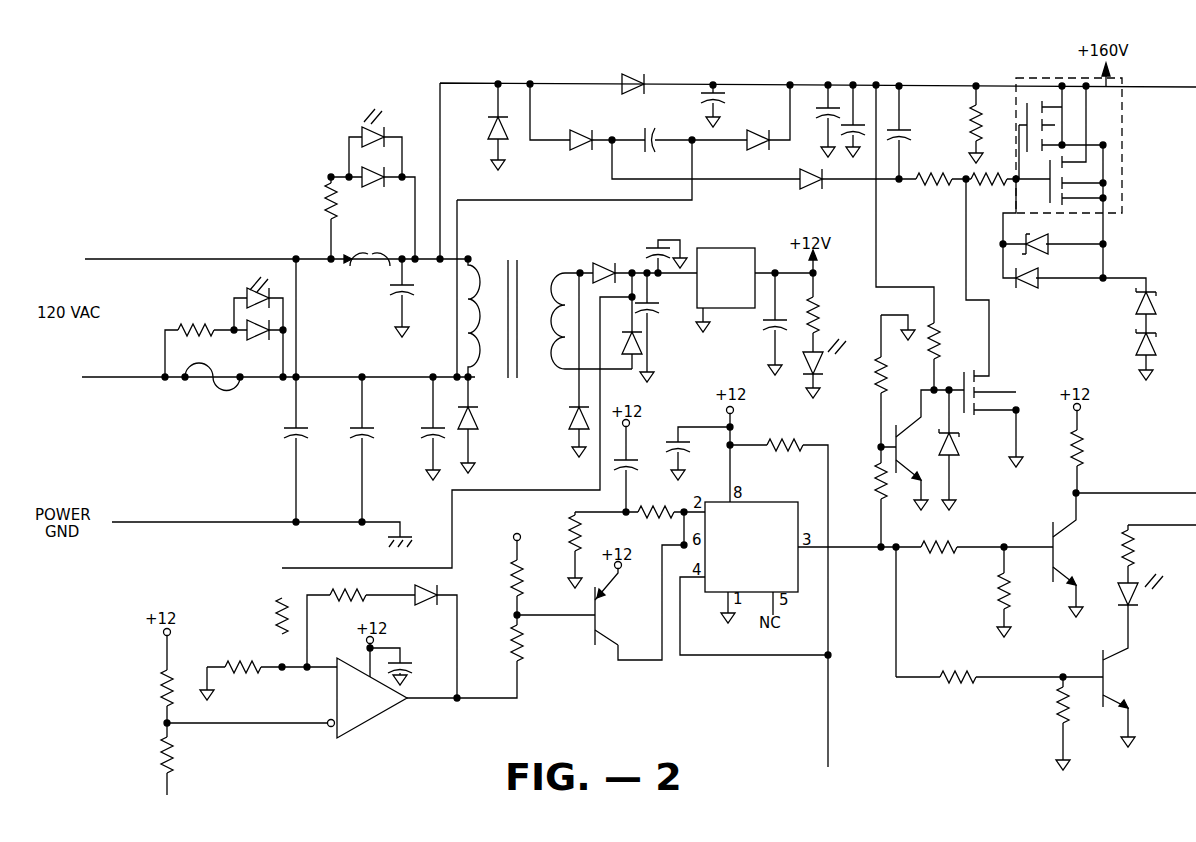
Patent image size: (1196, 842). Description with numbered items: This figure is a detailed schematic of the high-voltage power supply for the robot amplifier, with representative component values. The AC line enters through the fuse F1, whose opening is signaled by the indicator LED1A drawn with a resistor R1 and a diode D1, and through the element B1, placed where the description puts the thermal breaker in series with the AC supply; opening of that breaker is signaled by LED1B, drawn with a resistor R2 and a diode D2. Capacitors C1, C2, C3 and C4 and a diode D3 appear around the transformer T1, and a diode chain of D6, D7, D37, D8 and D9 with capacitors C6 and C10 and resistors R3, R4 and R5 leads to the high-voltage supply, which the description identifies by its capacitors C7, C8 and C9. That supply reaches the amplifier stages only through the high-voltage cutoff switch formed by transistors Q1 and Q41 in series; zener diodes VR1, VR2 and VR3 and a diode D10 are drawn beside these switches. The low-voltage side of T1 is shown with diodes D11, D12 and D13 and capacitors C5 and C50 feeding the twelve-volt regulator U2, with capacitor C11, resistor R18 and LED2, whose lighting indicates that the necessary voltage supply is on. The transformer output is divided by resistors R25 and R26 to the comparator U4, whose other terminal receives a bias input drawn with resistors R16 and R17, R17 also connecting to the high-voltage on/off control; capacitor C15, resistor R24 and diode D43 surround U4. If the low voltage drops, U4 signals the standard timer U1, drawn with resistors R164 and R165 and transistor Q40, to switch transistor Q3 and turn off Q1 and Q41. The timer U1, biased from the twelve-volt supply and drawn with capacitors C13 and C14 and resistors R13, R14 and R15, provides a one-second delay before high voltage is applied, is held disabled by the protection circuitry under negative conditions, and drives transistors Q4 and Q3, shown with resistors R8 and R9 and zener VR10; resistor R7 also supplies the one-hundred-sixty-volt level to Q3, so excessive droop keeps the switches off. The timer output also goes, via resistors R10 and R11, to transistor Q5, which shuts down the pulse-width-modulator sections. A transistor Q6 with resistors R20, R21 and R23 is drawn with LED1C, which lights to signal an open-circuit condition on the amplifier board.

The LED LED1A is at (237, 286).
The resistor R1 10K 2W R1 is at (197, 336).
The diode D1 is at (258, 340).
The fuse F1 is at (211, 393).
The capacitor C1 is at (272, 435).
The capacitor C2 is at (338, 435).
The capacitor C3 is at (380, 316).
The capacitor C4 is at (410, 435).
The diode D3 is at (480, 418).
The resistor R2 10K 2W R2 is at (312, 207).
The diode D2 is at (368, 189).
The LED LED1B is at (351, 118).
The circuit breaker B1 is at (370, 249).
The transformer T1 is at (550, 305).
The diode D6 is at (481, 128).
The diode D7 is at (572, 132).
The capacitor C6 4.7 250V C6 is at (652, 129).
The diode D37 is at (628, 71).
The capacitor C7 is at (719, 104).
The diode D8 is at (755, 152).
The diode D9 is at (808, 188).
The capacitor C8 is at (818, 104).
The capacitor C9 is at (856, 119).
The capacitor C10 4.7 C10 is at (916, 125).
The resistor R3 16K 2W R3 is at (992, 124).
The resistor R4 33K 2W R4 is at (922, 177).
The resistor R5 330 1/2W R5 is at (988, 194).
The transistor Q41 is at (1055, 126).
The transistor Q1 is at (1069, 180).
The zener diode VR1 is at (1041, 233).
The diode D10 is at (1029, 287).
The zener diode VR2 is at (1125, 301).
The zener diode VR3 is at (1125, 342).
The 12-volt regulator U2 is at (726, 278).
The capacitor C50 0.1 C50 is at (633, 245).
The diode D11 is at (595, 262).
The diode D12 is at (622, 336).
The capacitor C5 is at (655, 313).
The diode D13 is at (560, 421).
The capacitor C11 10 15V C11 is at (757, 345).
The resistor R18 1K R18 is at (830, 312).
The LED LED2 is at (829, 367).
The resistor R7 is at (949, 343).
The transistor Q3 is at (992, 391).
The zener diode VR10 is at (971, 442).
The transistor Q4 is at (910, 449).
The resistor R8 1K R8 is at (893, 372).
The resistor R9 10K R9 is at (861, 482).
The resistor R10 10K R10 is at (938, 547).
The resistor R11 1K R11 is at (984, 593).
The transistor Q5 is at (1069, 552).
The resistor R23 1K R23 is at (1145, 550).
The LED LED1C is at (1149, 600).
The transistor Q6 is at (1118, 678).
The resistor R20 10K R20 is at (957, 676).
The resistor R21 1K R21 is at (1039, 706).
The timing device U1 is at (751, 547).
The capacitor C13 0.1 C13 is at (693, 448).
The resistor R13 10K R13 is at (785, 444).
The resistor R15 1K R15 is at (655, 510).
The capacitor C14 0.1 C14 is at (637, 453).
The resistor R14 10M R14 is at (555, 537).
The transistor Q40 is at (615, 616).
The resistor R164 10K R164 is at (494, 578).
The resistor R165 10K R165 is at (538, 642).
The comparator U4 is at (372, 698).
The capacitor C15 0.1 C15 is at (414, 665).
The resistor R24 12.1K 1% R24 is at (349, 595).
The diode D43 is at (422, 605).
The resistor R25 is at (264, 607).
The resistor R26 is at (252, 667).
The resistor R16 12.1K 1% R16 is at (138, 694).
The resistor R17 is at (181, 760).